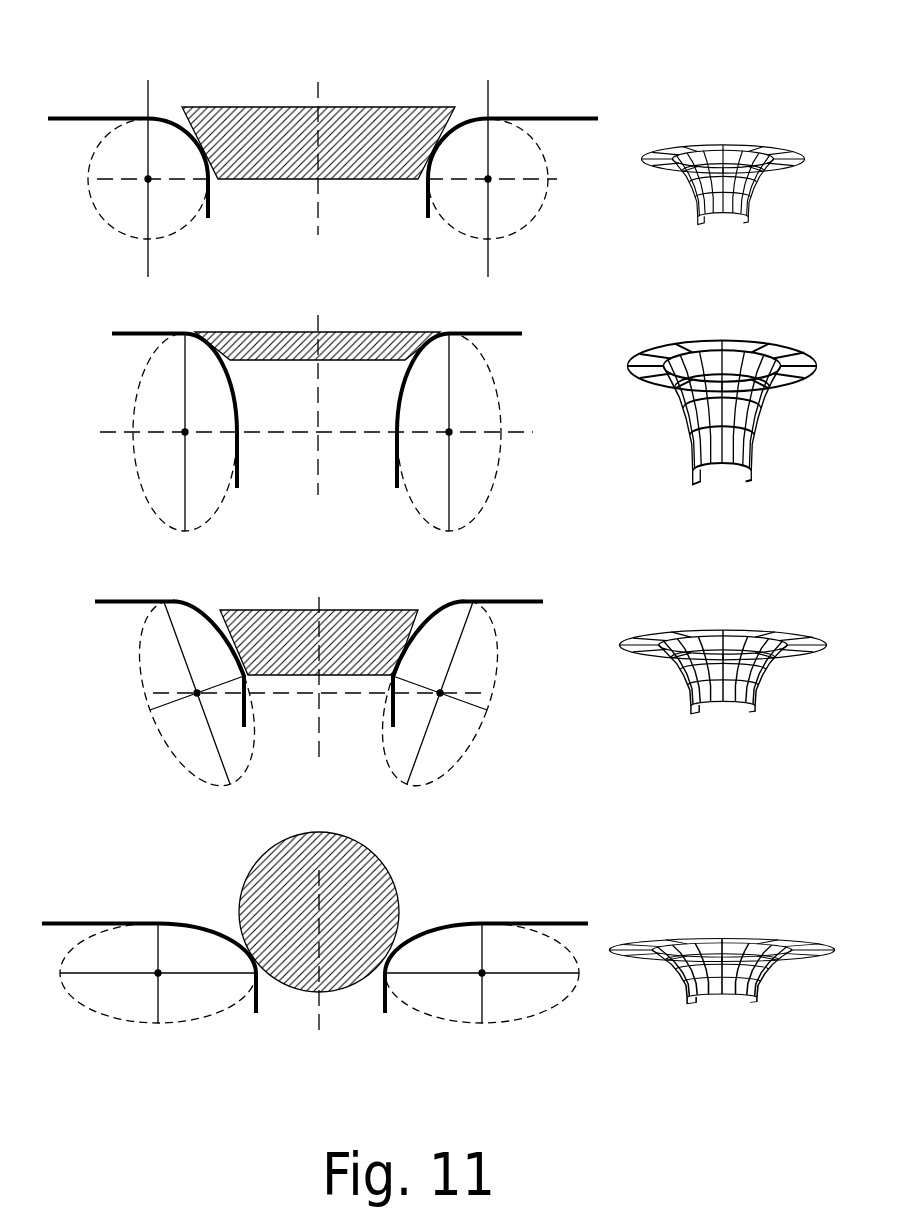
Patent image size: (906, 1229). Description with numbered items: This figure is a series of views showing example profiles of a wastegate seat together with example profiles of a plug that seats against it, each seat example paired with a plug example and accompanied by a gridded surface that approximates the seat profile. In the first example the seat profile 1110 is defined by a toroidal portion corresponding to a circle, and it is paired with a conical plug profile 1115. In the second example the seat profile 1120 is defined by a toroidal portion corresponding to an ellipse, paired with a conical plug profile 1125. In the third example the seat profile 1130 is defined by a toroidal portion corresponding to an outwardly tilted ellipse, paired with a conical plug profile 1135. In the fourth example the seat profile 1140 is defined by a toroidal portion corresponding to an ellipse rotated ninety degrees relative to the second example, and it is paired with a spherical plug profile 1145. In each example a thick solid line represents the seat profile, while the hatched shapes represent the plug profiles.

The wastegate seat profile 1110 is at (127, 88).
The plug profile 1115 is at (402, 156).
The wastegate seat profile 1120 is at (127, 318).
The plug profile 1125 is at (393, 356).
The wastegate seat profile 1130 is at (127, 588).
The plug profile 1135 is at (383, 646).
The wastegate seat profile 1140 is at (127, 896).
The plug profile 1145 is at (345, 928).